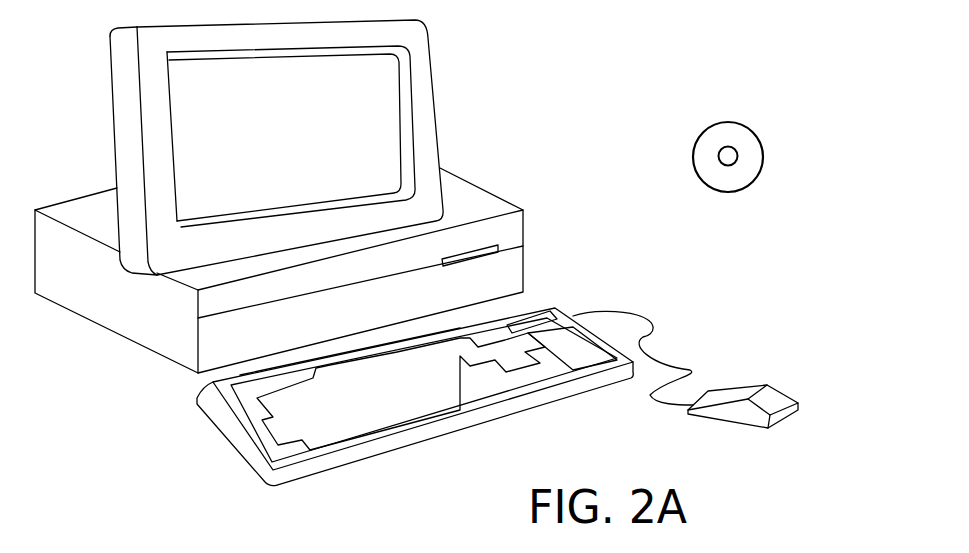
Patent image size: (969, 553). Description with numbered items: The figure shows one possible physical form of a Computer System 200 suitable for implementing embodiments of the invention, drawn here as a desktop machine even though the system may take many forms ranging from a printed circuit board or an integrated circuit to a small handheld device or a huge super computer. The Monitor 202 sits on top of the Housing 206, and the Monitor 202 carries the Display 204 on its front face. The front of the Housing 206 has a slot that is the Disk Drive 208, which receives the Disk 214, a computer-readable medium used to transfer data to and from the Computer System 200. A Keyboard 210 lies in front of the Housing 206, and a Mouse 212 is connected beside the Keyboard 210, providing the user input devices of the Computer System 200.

The computer system 200 is at (636, 97).
The monitor 202 is at (430, 143).
The display 204 is at (387, 88).
The housing 206 is at (157, 355).
The disk drive 208 is at (490, 240).
The keyboard 210 is at (413, 437).
The mouse 212 is at (778, 390).
The disk 214 is at (745, 123).